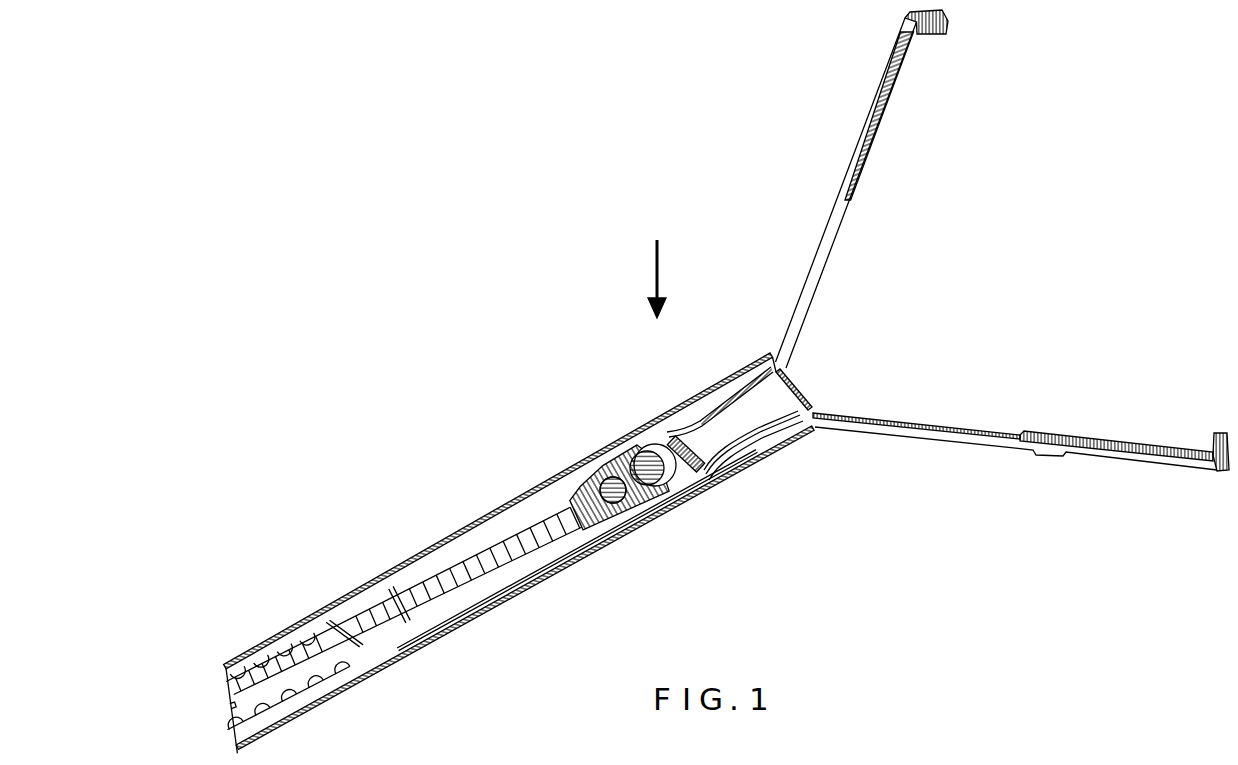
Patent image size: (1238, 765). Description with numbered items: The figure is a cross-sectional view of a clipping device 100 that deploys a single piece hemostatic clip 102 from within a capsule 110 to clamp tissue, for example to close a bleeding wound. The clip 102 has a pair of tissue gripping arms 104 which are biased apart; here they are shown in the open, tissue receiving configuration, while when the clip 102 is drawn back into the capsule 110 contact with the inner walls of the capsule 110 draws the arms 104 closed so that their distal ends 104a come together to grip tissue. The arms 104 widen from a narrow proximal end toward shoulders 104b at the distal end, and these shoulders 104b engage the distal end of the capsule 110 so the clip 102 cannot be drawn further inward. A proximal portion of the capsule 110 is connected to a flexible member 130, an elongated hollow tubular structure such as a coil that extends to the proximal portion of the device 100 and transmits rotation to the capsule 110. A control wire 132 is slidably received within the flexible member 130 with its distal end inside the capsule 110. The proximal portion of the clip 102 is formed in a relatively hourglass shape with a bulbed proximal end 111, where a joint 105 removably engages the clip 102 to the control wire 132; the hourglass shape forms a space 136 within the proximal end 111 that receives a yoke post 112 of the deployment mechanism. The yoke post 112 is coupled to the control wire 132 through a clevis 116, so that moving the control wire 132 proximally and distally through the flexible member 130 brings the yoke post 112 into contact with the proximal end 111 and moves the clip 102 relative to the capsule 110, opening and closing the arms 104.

The clipping device 100 is at (534, 255).
The hemostatic clip 102 is at (836, 70).
The tissue gripping arms 104 is at (818, 261).
The hook end of clip arm 104a is at (878, 123).
The shoulders 104b is at (1047, 457).
The joint 105 is at (654, 264).
The capsule 110 is at (560, 470).
The bulbed proximal end 111 is at (672, 432).
The yoke post 112 is at (707, 474).
The clevis 116 is at (622, 533).
The flexible member 130 is at (243, 655).
The control wire 132 is at (487, 563).
The space 136 is at (714, 447).